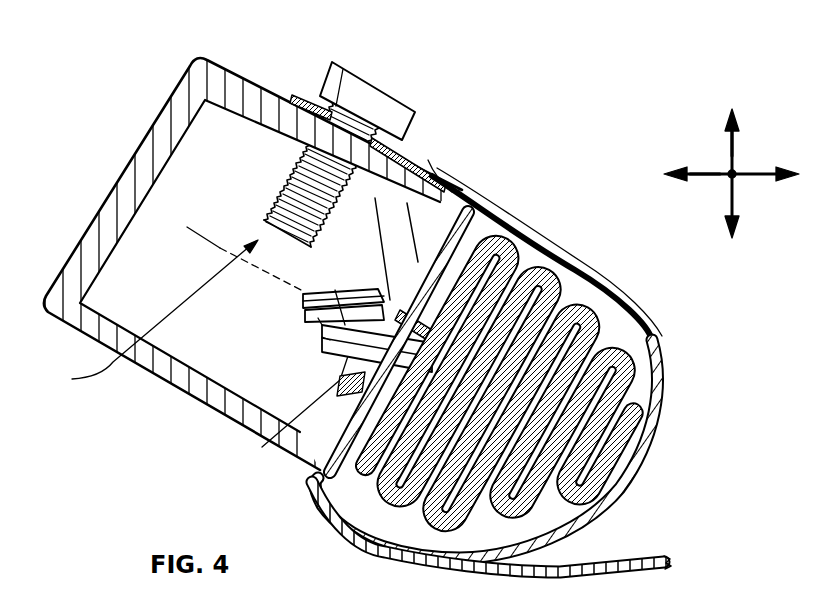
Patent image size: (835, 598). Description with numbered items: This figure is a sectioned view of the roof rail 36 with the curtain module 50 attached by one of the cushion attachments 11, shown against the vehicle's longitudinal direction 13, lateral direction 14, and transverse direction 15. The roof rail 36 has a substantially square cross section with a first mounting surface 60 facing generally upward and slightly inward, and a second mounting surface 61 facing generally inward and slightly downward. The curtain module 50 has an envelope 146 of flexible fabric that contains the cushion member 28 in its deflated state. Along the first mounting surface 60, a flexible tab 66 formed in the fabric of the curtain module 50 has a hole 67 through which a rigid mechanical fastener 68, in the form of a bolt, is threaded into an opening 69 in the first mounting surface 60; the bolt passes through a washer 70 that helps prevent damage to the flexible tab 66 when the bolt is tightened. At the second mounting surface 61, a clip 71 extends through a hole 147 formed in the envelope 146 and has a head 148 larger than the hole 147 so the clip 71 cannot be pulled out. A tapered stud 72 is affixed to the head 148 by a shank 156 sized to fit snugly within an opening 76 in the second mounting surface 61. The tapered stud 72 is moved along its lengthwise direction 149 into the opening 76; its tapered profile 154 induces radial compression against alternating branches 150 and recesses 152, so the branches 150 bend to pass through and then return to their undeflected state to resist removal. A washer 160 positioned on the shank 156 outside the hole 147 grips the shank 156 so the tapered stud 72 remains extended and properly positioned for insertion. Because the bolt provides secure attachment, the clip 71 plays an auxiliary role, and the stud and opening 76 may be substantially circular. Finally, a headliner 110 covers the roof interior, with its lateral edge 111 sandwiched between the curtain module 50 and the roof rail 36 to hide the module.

The cushion attachment 11 is at (151, 313).
The longitudinal direction 13 is at (740, 168).
The lateral direction 14 is at (706, 175).
The transverse direction 15 is at (730, 134).
The cushion member 28 is at (645, 338).
The roof rail 36 is at (125, 128).
The curtain module 50 is at (500, 362).
The first mounting surface 60 is at (222, 72).
The second mounting surface 61 is at (480, 208).
The flexible tab 66 is at (448, 186).
The hole 67 is at (310, 95).
The rigid mechanical fastener 68 is at (377, 89).
The opening 69 is at (292, 142).
The washer 70 is at (407, 187).
The clip 71 is at (282, 318).
The tapered stud 72 is at (302, 297).
The opening 76 is at (381, 304).
The headliner 110 is at (647, 553).
The lateral edge 111 is at (303, 468).
The envelope 146 is at (640, 447).
The hole 147 is at (262, 447).
The head 148 is at (398, 294).
The lengthwise direction 149 is at (200, 243).
The branch 150 is at (322, 318).
The recess 152 is at (327, 338).
The tapered profile 154 is at (337, 290).
The shank 156 is at (350, 382).
The washer 160 is at (430, 300).